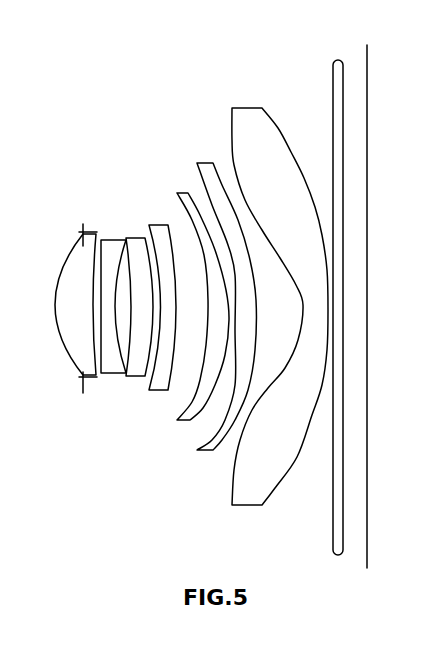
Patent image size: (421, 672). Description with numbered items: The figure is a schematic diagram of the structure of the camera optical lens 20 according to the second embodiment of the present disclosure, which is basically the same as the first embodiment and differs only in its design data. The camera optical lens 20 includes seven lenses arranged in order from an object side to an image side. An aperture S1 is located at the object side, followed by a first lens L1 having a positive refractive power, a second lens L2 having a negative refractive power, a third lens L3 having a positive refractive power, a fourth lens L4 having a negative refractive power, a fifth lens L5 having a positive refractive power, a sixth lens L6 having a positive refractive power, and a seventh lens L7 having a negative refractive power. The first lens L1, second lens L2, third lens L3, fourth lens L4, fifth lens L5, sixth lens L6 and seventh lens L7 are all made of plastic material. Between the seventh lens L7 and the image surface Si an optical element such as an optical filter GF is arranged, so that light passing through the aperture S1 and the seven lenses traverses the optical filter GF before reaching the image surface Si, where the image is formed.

The camera optical lens 20 is at (238, 28).
The first lens L1 is at (63, 304).
The aperture S1 is at (81, 295).
The second lens L2 is at (111, 296).
The third lens L3 is at (137, 286).
The fourth lens L4 is at (162, 293).
The fifth lens L5 is at (193, 294).
The sixth lens L6 is at (221, 292).
The seventh lens L7 is at (274, 293).
The optical filter GF is at (331, 295).
The image surface Si is at (366, 295).